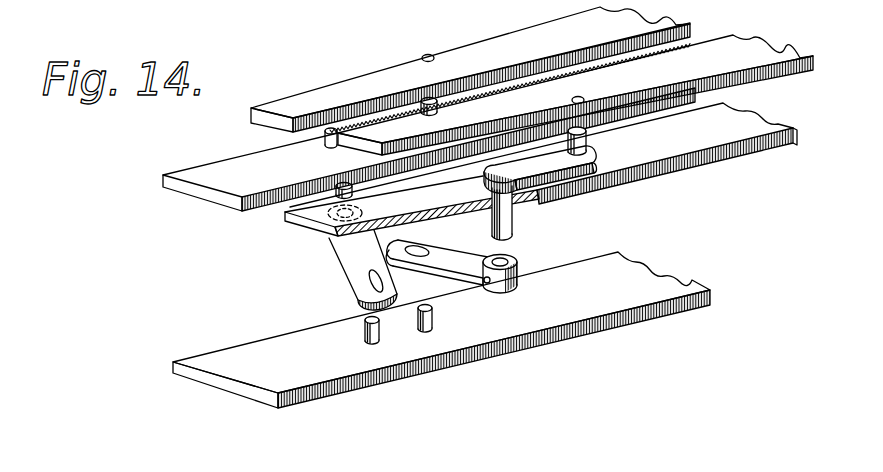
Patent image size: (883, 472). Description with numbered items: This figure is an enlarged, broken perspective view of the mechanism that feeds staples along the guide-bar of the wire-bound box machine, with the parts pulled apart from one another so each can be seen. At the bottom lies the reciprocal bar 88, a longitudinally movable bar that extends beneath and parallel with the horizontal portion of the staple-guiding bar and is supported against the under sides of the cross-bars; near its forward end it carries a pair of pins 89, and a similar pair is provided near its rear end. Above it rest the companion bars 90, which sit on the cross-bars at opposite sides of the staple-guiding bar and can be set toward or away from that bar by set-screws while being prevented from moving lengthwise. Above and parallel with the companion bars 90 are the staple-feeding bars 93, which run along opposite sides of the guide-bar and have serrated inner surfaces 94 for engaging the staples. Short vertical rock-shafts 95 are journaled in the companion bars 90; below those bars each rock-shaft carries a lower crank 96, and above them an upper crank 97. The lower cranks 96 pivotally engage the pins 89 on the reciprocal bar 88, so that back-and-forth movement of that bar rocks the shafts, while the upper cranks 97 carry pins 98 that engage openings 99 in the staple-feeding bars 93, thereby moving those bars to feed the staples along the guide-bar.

The reciprocal bar 88 is at (282, 343).
The pins 89 is at (416, 327).
The companion bars 90 is at (684, 160).
The staple-feeding bars 93 is at (513, 33).
The serrated inner surfaces 94 is at (585, 70).
The rock-shafts 95 is at (513, 226).
The lower cranks 96 is at (457, 238).
The upper cranks 97 is at (550, 162).
The pins 98 is at (588, 142).
The openings 99 is at (435, 58).